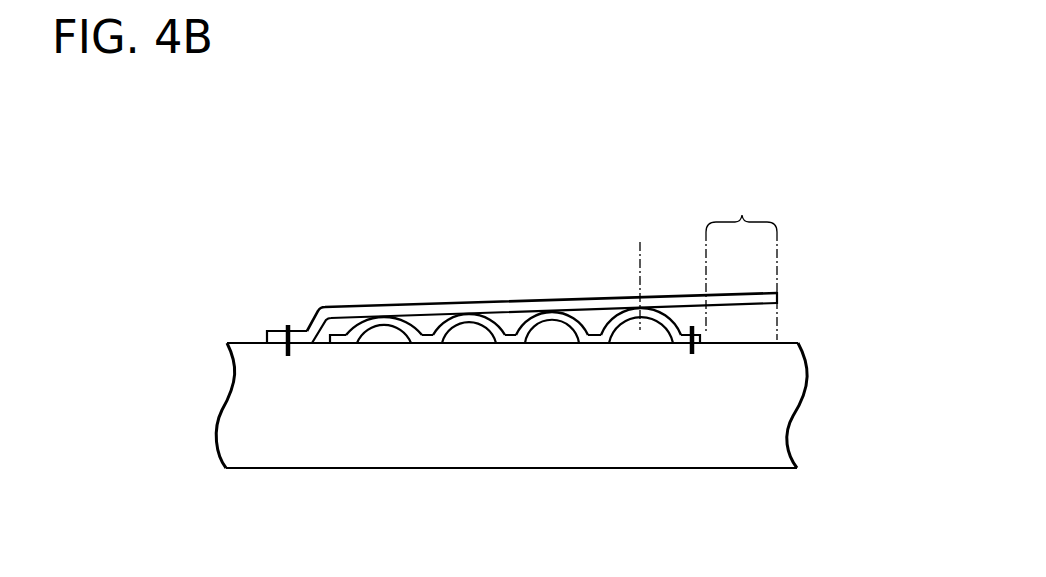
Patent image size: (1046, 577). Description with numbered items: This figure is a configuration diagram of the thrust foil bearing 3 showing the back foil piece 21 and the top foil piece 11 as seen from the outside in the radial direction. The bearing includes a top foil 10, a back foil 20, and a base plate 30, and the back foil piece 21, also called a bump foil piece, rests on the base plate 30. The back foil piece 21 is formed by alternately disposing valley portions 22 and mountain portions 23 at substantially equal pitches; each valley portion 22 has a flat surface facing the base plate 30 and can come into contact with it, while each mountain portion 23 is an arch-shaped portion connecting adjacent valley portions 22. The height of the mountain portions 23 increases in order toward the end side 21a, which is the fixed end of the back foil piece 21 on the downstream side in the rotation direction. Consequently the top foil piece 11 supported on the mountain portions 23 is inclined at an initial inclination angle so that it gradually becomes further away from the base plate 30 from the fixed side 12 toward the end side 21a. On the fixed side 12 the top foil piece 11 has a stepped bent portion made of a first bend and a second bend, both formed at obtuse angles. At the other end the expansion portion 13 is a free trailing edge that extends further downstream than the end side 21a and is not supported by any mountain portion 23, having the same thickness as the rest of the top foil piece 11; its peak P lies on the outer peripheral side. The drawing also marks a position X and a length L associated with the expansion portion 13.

The thrust foil bearing 3 is at (256, 203).
The top foil 10 is at (495, 290).
The top foil piece 11 is at (470, 306).
The fixed side 12 is at (270, 331).
The expansion portion 13 is at (741, 293).
The back foil 20 is at (374, 350).
The back foil piece 21 is at (392, 325).
The end side 21a is at (697, 333).
The valley portion 22 is at (595, 320).
The mountain portion 23 is at (551, 307).
The base plate 30 is at (773, 405).
The position X is at (639, 270).
The length L is at (705, 267).
The peak P is at (779, 297).